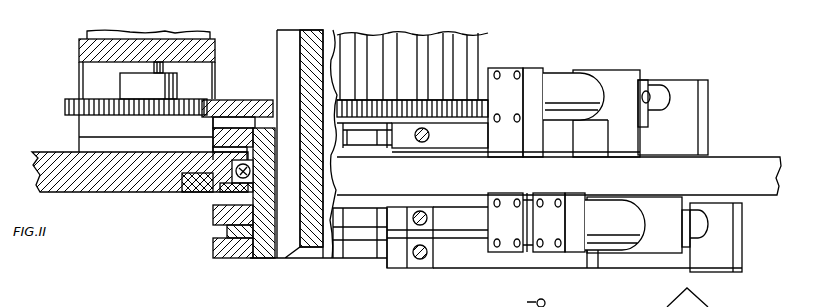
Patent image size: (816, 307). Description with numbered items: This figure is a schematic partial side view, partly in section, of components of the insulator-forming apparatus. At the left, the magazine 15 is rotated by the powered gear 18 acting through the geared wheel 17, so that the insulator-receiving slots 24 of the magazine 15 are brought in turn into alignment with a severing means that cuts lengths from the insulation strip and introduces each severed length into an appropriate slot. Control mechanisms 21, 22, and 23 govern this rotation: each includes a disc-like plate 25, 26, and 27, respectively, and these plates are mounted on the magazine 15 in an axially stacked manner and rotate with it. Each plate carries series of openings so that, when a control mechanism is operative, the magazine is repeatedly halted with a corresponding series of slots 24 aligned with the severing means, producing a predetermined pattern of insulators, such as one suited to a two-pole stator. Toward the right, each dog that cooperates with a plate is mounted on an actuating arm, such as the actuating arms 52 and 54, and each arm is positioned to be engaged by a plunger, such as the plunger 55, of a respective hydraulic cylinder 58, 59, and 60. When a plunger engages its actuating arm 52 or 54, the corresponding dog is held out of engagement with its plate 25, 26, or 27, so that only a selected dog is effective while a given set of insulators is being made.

The magazine 15 is at (497, 60).
The geared wheel 17 is at (233, 100).
The powered gear 18 is at (65, 106).
The control mechanism 21 is at (462, 159).
The control mechanism 22 is at (469, 193).
The control mechanism 23 is at (471, 280).
The insulator-receiving slots 24 is at (418, 55).
The plate 25 is at (213, 143).
The plate 26 is at (213, 214).
The plate 27 is at (213, 246).
The actuating arm 52 is at (683, 87).
The actuating arm 54 is at (720, 233).
The plunger 55 is at (647, 95).
The hydraulic cylinder 58 is at (577, 83).
The hydraulic cylinder 59 is at (535, 199).
The hydraulic cylinder 60 is at (622, 210).